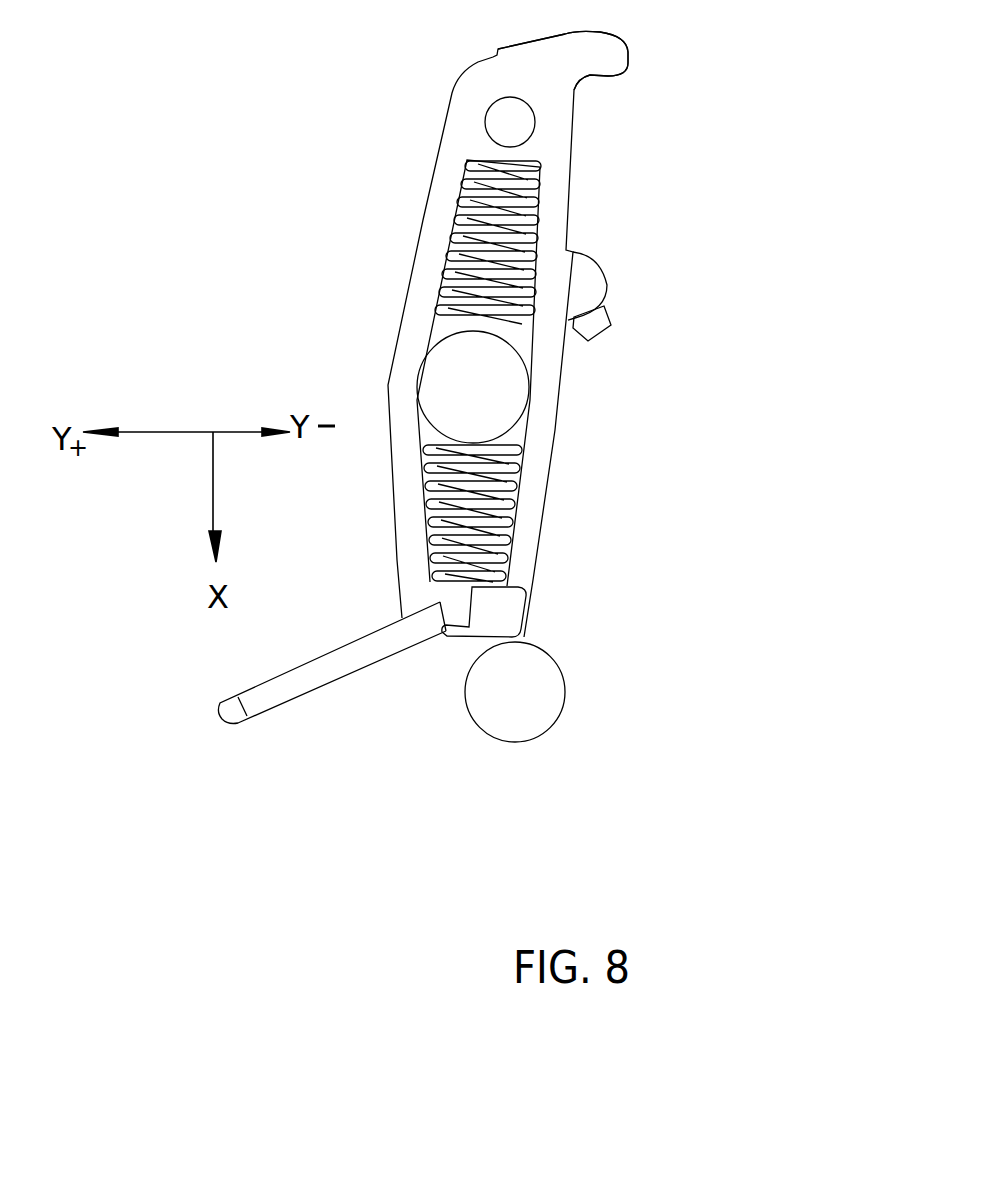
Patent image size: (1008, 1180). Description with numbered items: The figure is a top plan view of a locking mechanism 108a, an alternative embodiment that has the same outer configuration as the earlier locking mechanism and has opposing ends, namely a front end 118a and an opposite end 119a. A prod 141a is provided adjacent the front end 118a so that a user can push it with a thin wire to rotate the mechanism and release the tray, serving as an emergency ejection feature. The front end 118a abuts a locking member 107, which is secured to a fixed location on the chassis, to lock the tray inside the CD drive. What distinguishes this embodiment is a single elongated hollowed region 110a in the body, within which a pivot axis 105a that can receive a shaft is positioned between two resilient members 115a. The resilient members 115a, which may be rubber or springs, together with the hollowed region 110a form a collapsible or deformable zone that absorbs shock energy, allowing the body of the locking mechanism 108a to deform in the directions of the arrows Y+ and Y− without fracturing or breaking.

The locking mechanism 108a is at (422, 155).
The elongated hollowed region 110a is at (440, 287).
The end 119a is at (603, 53).
The resilient members 115a is at (527, 214).
The pivot axis 105a is at (527, 365).
The front end 118a is at (507, 622).
The prod 141a is at (318, 675).
The locking member 107 is at (562, 715).